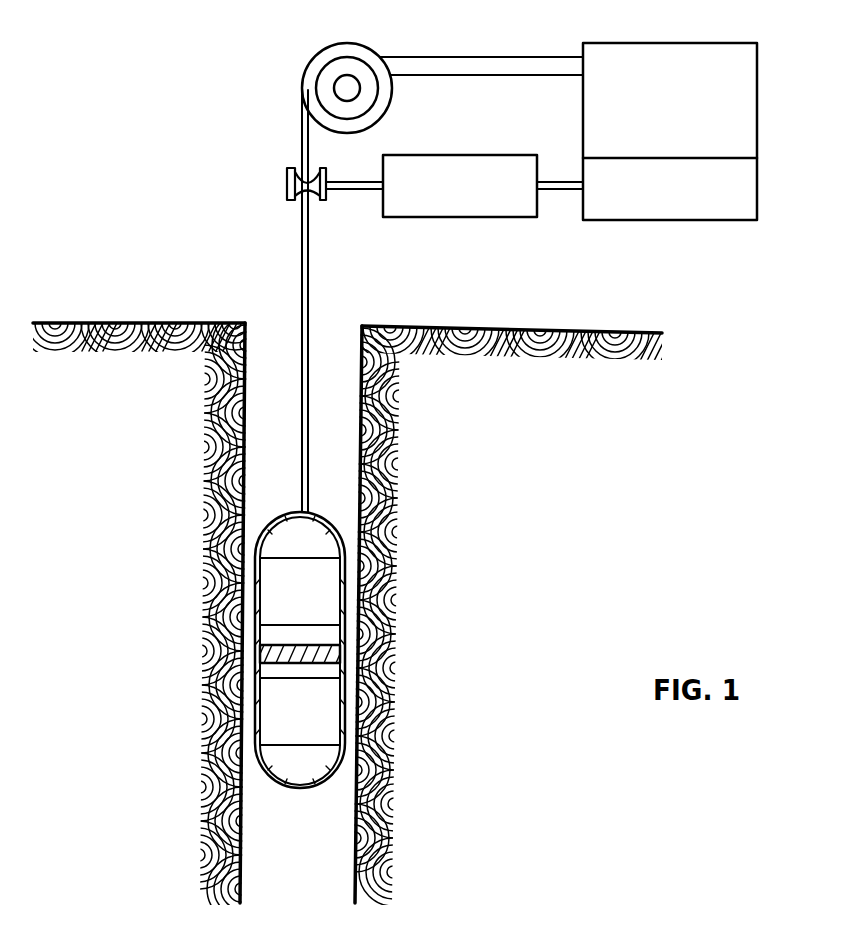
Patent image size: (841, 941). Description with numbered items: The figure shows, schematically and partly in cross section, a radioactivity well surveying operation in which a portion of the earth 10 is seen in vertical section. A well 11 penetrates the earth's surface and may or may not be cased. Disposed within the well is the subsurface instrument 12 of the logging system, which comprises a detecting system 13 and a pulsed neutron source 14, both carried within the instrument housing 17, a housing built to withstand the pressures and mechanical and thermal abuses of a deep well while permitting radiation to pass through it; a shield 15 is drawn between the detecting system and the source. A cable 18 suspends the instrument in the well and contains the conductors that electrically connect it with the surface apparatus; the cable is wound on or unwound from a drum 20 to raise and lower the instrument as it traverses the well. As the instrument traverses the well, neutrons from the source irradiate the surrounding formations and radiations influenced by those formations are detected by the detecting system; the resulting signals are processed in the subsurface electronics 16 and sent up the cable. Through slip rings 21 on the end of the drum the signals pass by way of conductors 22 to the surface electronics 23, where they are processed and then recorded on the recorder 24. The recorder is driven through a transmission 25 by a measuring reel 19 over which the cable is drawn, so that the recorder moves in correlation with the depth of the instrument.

The earth 10 is at (156, 323).
The well 11 is at (280, 346).
The subsurface instrument 12 is at (310, 512).
The detecting system 13 is at (313, 614).
The pulsed neutron source 14 is at (323, 730).
The shield 15 is at (330, 657).
The subsurface electronics 16 is at (332, 552).
The instrument housing 17 is at (327, 782).
The cable 18 is at (309, 320).
The measuring reel 19 is at (287, 178).
The drum 20 is at (302, 78).
The slip rings 21 is at (362, 93).
The conductors 22 is at (448, 75).
The surface electronics 23 is at (720, 43).
The recorder 24 is at (757, 190).
The transmission 25 is at (498, 155).